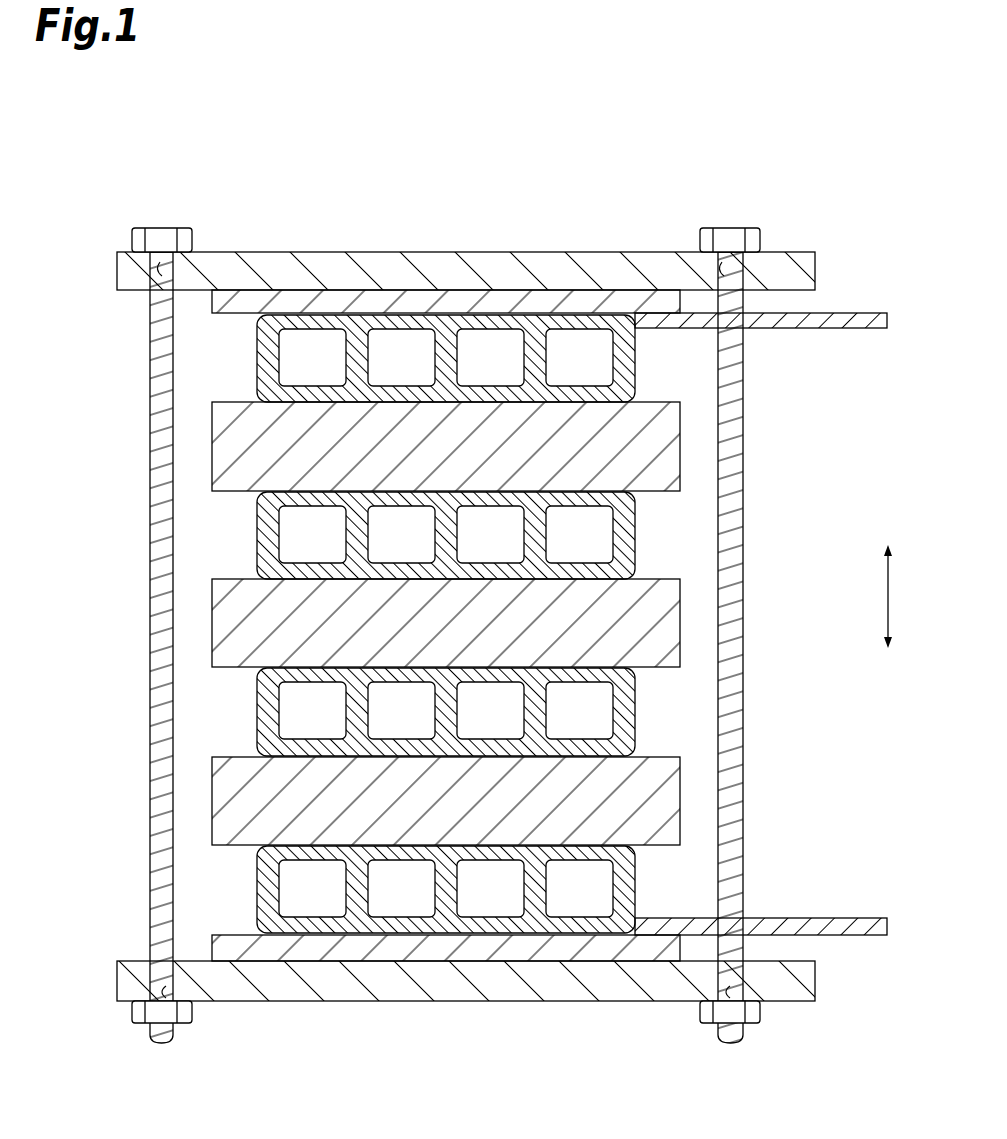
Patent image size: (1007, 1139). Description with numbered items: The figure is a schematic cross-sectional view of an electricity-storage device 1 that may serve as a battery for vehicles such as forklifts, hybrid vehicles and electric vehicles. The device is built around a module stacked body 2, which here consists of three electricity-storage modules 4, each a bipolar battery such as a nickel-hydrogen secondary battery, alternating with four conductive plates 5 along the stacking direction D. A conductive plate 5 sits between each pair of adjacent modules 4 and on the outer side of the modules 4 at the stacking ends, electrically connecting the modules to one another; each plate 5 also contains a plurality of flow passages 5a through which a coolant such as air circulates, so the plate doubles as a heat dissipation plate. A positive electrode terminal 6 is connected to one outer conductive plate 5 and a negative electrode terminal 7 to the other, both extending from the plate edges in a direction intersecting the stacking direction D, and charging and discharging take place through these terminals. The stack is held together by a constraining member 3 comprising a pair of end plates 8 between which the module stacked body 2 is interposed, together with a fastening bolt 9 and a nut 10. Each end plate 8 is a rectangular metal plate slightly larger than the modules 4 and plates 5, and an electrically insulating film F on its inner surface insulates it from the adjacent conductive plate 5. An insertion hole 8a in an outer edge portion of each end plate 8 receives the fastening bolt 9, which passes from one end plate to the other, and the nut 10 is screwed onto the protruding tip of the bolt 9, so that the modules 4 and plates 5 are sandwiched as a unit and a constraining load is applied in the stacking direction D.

The electricity-storage device 1 is at (139, 157).
The module stacked body 2 is at (190, 553).
The constraining member 3 is at (816, 237).
The electricity-storage module 4 is at (681, 447).
The conductive plate 5 is at (637, 378).
The flow passage 5a is at (290, 356).
The positive electrode terminal 6 is at (860, 917).
The negative electrode terminal 7 is at (858, 330).
The end plate 8 is at (477, 256).
The insertion hole 8a is at (160, 264).
The fastening bolt 9 is at (149, 600).
The nut 10 is at (141, 1024).
The film F is at (214, 300).
The stacking direction D is at (892, 596).